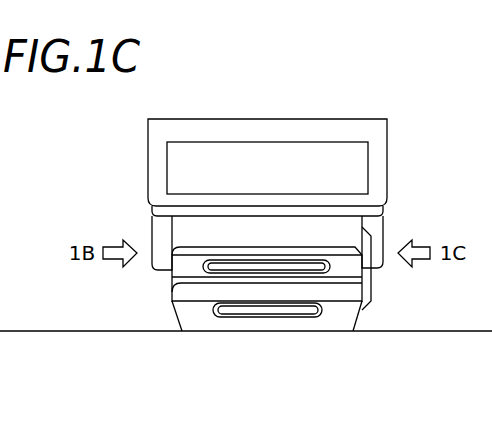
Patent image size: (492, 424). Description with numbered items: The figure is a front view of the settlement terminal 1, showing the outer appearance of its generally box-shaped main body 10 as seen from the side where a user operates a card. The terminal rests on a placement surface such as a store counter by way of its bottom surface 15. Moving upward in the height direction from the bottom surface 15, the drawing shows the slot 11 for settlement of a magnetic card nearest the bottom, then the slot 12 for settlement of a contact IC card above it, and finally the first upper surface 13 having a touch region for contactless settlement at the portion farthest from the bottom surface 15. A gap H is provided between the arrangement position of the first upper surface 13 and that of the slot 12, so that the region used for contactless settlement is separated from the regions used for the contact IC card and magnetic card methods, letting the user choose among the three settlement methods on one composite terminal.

The settlement terminal 1 is at (337, 103).
The main body 10 is at (198, 313).
The slot for settlement of a magnetic card 11 is at (330, 282).
The slot for settlement of a contact IC card 12 is at (331, 266).
The first upper surface 13 is at (338, 173).
The bottom surface 15 is at (265, 331).
The gap H is at (230, 236).